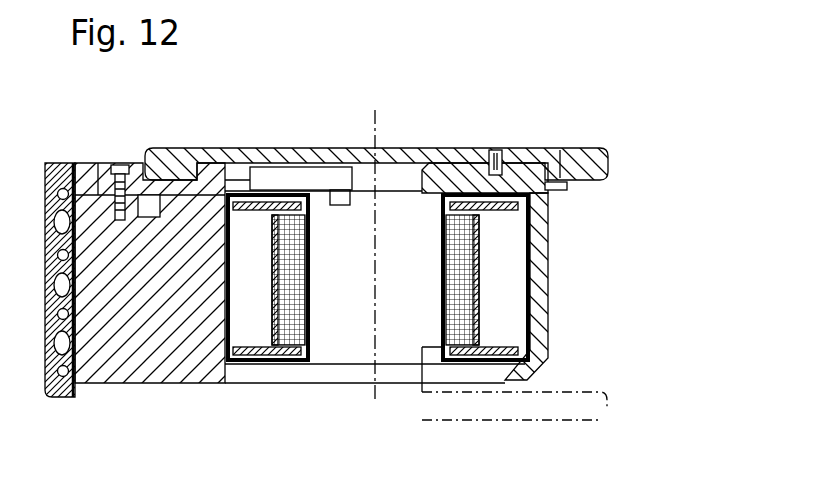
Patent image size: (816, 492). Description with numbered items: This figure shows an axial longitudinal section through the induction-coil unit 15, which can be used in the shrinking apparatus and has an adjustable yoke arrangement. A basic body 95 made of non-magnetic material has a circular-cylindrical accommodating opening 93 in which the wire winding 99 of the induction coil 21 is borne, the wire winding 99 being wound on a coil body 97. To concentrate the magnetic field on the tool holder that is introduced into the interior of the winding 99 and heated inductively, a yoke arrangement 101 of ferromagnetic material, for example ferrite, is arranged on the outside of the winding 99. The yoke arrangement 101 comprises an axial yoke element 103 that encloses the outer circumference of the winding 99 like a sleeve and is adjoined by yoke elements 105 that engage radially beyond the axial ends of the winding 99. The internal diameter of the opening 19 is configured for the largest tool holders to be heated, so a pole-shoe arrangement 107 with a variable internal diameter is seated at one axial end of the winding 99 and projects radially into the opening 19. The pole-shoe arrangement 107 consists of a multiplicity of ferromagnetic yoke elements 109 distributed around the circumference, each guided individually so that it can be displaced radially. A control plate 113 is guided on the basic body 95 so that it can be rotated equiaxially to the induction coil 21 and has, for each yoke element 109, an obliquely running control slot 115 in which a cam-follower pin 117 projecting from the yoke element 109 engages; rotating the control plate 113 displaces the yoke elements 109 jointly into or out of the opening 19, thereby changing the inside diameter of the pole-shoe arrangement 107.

The induction-coil unit 15 is at (597, 132).
The opening 19 is at (412, 218).
The induction coil 21 is at (437, 293).
The accommodating opening 93 is at (527, 258).
The basic body 95 is at (127, 343).
The coil body 97 is at (315, 337).
The wire winding 99 is at (292, 323).
The yoke arrangement 101 is at (262, 312).
The axial yoke element 103 is at (487, 360).
The yoke elements 105 is at (535, 214).
The pole-shoe arrangement 107 is at (272, 146).
The yoke elements 109 is at (337, 170).
The control plate 113 is at (598, 158).
The control slot 115 is at (495, 148).
The cam-follower pin 117 is at (497, 147).